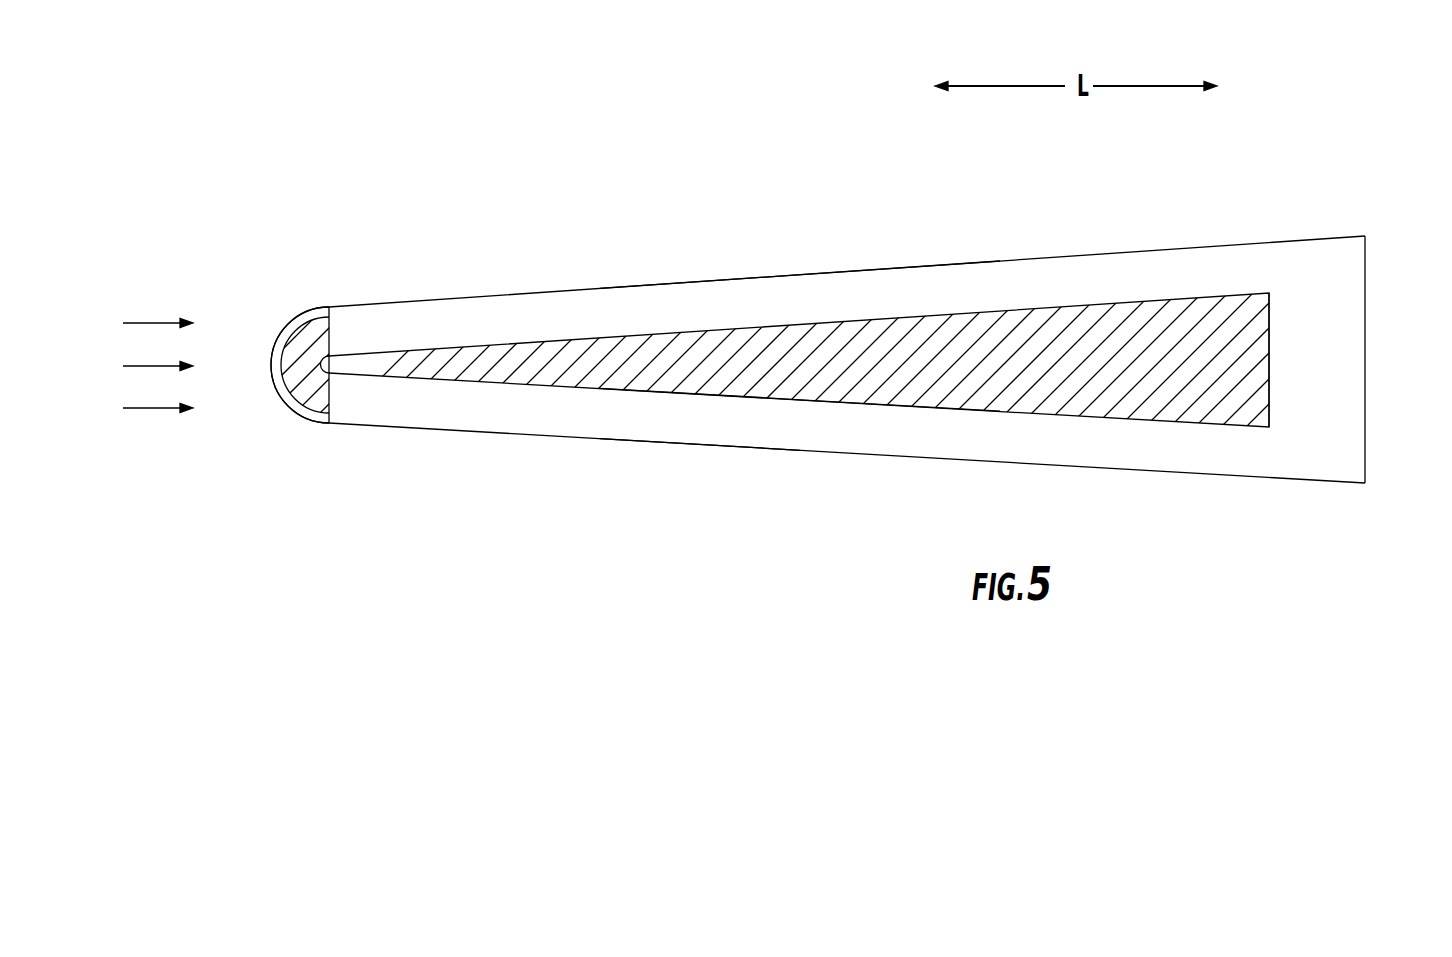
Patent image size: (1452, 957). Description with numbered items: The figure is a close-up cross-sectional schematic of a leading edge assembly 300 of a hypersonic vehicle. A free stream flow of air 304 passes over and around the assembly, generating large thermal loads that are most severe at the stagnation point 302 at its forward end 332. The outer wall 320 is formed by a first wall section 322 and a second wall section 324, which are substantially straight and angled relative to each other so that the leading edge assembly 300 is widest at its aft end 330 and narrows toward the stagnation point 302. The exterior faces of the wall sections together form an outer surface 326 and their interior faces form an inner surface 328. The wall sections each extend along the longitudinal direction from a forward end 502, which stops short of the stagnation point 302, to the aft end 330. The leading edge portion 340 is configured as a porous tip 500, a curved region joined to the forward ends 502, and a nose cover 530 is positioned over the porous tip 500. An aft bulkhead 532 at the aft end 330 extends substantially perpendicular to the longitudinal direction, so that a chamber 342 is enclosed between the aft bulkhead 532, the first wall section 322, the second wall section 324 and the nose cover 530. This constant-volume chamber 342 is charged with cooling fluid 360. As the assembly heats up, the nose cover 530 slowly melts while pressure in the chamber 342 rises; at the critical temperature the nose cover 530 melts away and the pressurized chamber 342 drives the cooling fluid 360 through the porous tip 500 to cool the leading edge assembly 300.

The leading edge assembly 300 is at (800, 80).
The stagnation point 302 is at (270, 365).
The free stream flow of air 304 is at (155, 322).
The outer wall 320 is at (1117, 275).
The first wall section 322 is at (877, 292).
The second wall section 324 is at (720, 433).
The outer surface 326 is at (713, 278).
The inner surface 328 is at (715, 390).
The aft end 330 is at (1364, 213).
The forward end 332 is at (272, 316).
The leading edge portion 340 is at (355, 467).
The chamber 342 is at (1074, 375).
The cooling fluid 360 is at (878, 367).
The porous tip 500 is at (310, 392).
The forward end 502 is at (342, 330).
The nose cover 530 is at (297, 322).
The aft bulkhead 532 is at (1320, 370).